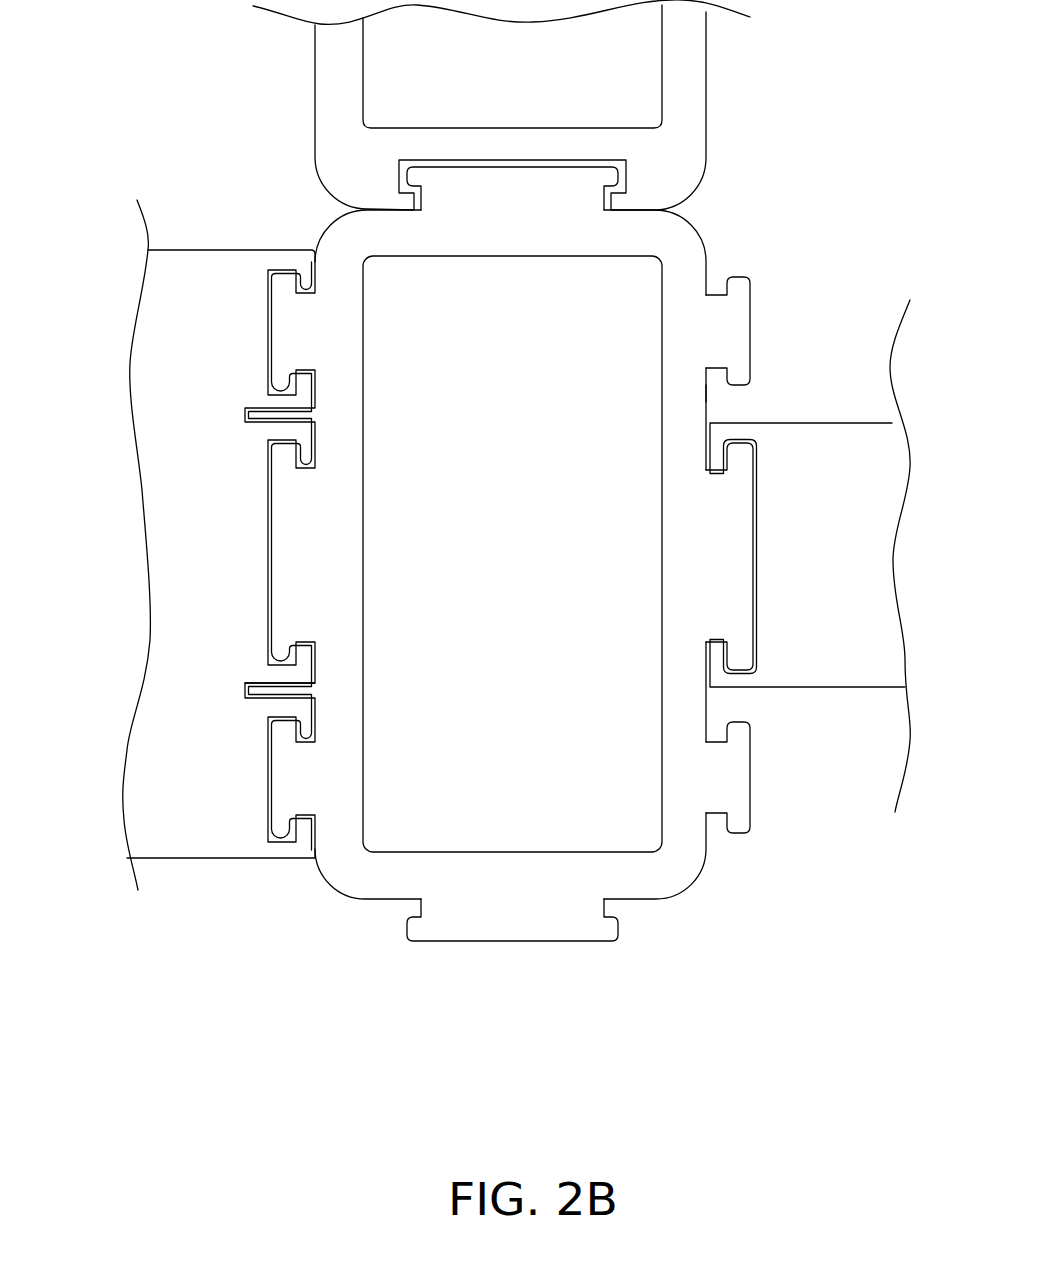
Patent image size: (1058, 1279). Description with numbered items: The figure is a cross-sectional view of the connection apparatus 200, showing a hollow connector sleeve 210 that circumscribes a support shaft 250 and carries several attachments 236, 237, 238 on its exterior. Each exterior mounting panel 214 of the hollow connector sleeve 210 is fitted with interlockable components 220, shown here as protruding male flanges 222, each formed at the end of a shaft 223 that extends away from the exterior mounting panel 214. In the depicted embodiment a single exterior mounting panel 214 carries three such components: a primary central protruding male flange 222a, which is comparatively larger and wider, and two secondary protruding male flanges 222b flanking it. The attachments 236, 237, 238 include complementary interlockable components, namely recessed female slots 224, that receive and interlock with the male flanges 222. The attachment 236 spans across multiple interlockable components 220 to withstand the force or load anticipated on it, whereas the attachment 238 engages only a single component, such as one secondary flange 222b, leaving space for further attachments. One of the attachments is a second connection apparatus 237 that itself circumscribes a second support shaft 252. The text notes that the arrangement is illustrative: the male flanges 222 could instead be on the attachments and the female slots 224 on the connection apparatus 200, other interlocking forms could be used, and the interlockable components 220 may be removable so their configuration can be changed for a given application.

The connection apparatus 200 is at (158, 81).
The hollow connector sleeve 210 is at (534, 232).
The exterior mounting panel 214 is at (720, 402).
The interlockable component 220 is at (222, 720).
The protruding male flange 222 is at (288, 350).
The primary central protruding male flange 222a is at (733, 605).
The secondary protruding male flange 222b is at (733, 338).
The shaft 223 is at (312, 342).
The female slot 224 is at (283, 270).
The attachment 236 is at (227, 569).
The second connection apparatus 237 is at (534, 154).
The attachment 238 is at (845, 569).
The support shaft 250 is at (534, 587).
The second support shaft 252 is at (534, 104).